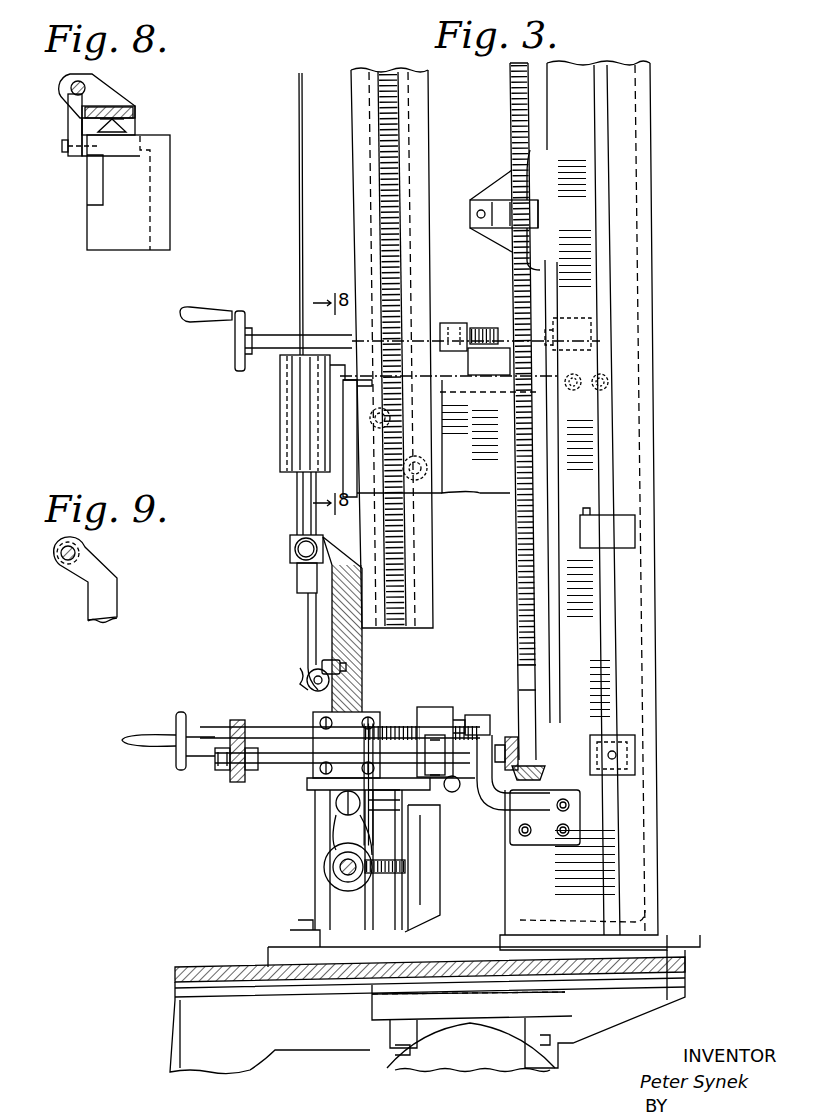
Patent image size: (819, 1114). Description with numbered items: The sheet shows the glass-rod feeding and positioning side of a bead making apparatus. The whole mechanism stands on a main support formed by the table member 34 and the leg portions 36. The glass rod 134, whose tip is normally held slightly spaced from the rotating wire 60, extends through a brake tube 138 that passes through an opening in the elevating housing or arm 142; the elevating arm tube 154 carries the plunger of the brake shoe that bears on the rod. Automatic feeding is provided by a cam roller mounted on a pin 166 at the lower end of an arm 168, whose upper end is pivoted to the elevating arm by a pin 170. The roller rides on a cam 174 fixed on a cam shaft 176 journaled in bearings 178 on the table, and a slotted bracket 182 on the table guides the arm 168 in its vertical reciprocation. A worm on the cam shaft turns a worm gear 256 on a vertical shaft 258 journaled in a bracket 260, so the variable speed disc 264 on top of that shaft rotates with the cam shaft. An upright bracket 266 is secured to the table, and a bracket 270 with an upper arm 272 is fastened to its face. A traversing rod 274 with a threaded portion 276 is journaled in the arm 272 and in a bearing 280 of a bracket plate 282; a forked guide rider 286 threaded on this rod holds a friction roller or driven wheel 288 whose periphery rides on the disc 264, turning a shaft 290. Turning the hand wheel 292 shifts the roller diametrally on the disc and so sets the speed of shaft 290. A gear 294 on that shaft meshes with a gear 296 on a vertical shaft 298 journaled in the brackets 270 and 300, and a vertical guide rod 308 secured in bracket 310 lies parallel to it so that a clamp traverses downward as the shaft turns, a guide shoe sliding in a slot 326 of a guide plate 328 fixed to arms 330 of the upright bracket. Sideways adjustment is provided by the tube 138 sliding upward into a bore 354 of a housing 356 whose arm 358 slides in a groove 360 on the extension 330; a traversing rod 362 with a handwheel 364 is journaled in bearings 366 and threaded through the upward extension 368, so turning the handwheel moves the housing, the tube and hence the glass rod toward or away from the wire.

In FIG. 3, the table member 34 is at (222, 966).
In FIG. 3, the leg portions 36 is at (175, 1040).
In FIG. 3, the wire 60 is at (310, 672).
In FIG. 3, the glass rod 134 is at (308, 612).
In FIG. 3, the brake tube 138 is at (297, 490).
In FIG. 3, the elevating housing or arm 142 is at (290, 560).
In FIG. 3, the elevating arm tube 154 is at (297, 582).
In FIG. 3, the pin 166 is at (337, 805).
In FIG. 9, the arm 168 is at (118, 612).
In FIG. 3, the arm 168 is at (363, 658).
In FIG. 9, the pin 170 is at (66, 562).
In FIG. 3, the cam 174 is at (335, 835).
In FIG. 3, the cam shaft 176 is at (337, 870).
In FIG. 3, the bearings 178 is at (340, 878).
In FIG. 3, the bracket 182 is at (372, 712).
In FIG. 3, the worm gear 256 is at (405, 866).
In FIG. 3, the vertical shaft 258 is at (400, 880).
In FIG. 3, the bracket 260 is at (440, 910).
In FIG. 3, the variable speed disc 264 is at (478, 805).
In FIG. 3, the upright bracket 266 is at (648, 720).
In FIG. 3, the bracket 270 is at (570, 815).
In FIG. 3, the upper arm 272 is at (480, 715).
In FIG. 3, the traversing rod 274 is at (290, 695).
In FIG. 3, the threaded portion 276 is at (405, 722).
In FIG. 3, the bearing 280 is at (256, 706).
In FIG. 3, the bracket plate 282 is at (235, 783).
In FIG. 3, the forked guide rider 286 is at (455, 707).
In FIG. 3, the friction roller or driven wheel 288 is at (452, 790).
In FIG. 3, the shaft 290 is at (284, 760).
In FIG. 3, the hand wheel 292 is at (178, 768).
In FIG. 3, the gear 294 is at (522, 752).
In FIG. 3, the gear 296 is at (545, 772).
In FIG. 3, the vertical shaft 298 is at (533, 690).
In FIG. 3, the bracket 300 is at (540, 214).
In FIG. 3, the vertical guide rod 308 is at (610, 450).
In FIG. 3, the bracket 310 is at (635, 760).
In FIG. 3, the slot 326 is at (426, 530).
In FIG. 3, the guide plate 328 is at (436, 556).
In FIG. 8, the arms 330 is at (170, 190).
In FIG. 3, the arms 330 is at (450, 436).
In FIG. 3, the bore 354 is at (292, 423).
In FIG. 8, the housing 356 is at (135, 110).
In FIG. 3, the housing 356 is at (280, 380).
In FIG. 8, the arm 358 is at (110, 108).
In FIG. 3, the arm 358 is at (490, 361).
In FIG. 8, the groove 360 is at (126, 126).
In FIG. 8, the traversing rod 362 is at (72, 78).
In FIG. 3, the traversing rod 362 is at (488, 328).
In FIG. 3, the handwheel 364 is at (238, 340).
In FIG. 3, the bearings 366 is at (572, 318).
In FIG. 8, the upward extension 368 is at (64, 92).
In FIG. 3, the upward extension 368 is at (455, 323).